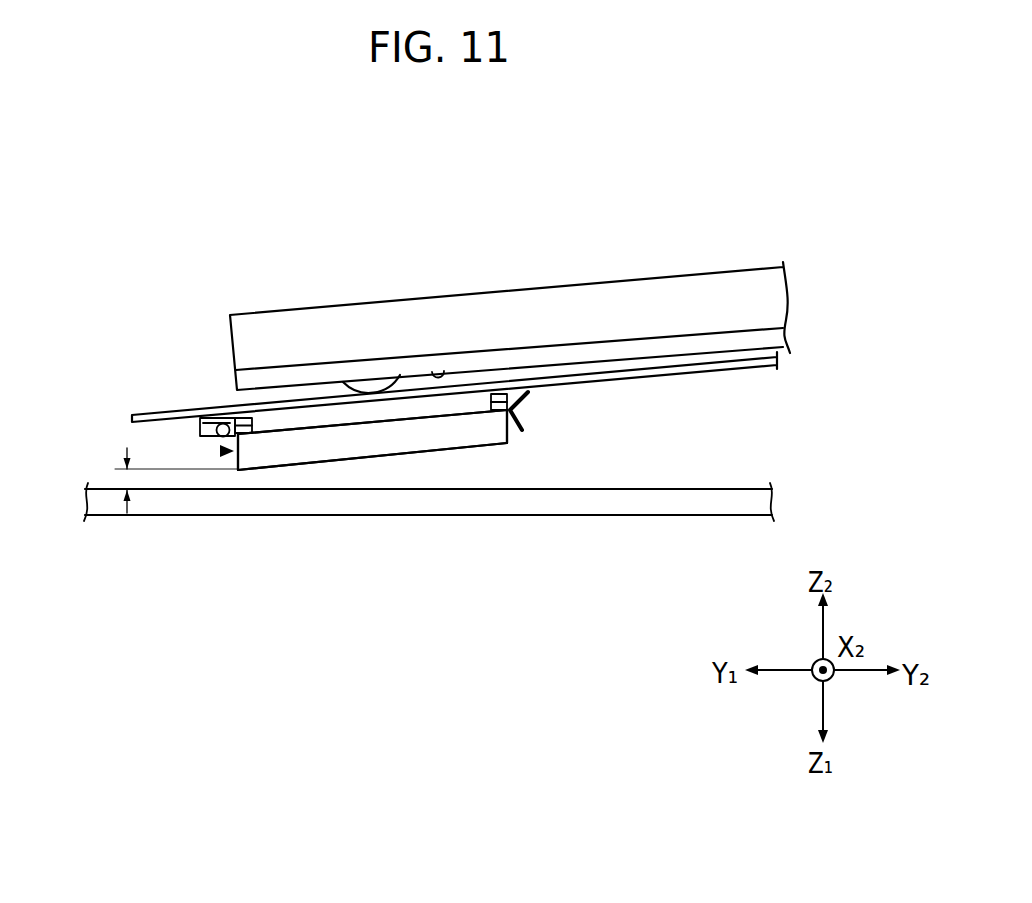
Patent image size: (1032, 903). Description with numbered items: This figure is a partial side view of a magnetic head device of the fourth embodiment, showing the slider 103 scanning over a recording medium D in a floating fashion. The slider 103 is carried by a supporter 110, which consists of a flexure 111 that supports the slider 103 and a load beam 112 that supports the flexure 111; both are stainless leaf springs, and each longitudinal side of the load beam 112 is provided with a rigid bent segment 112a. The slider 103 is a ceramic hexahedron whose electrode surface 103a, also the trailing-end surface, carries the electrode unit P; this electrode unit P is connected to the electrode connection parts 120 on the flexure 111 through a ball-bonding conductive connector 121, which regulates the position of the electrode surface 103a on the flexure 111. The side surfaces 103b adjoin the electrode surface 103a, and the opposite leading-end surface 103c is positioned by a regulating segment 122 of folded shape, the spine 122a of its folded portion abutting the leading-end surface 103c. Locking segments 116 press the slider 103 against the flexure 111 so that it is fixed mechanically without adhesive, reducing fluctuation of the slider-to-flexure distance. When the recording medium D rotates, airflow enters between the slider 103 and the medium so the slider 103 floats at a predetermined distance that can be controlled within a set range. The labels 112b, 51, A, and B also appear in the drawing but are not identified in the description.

The supporter 110 is at (723, 266).
The flexure 111 is at (732, 372).
The load beam 112 is at (773, 337).
The bent segment 112a is at (612, 303).
The protrusion of holding plate 112b is at (441, 377).
The roller 51 is at (371, 387).
The slider 103 is at (365, 455).
The electrode surface 103a is at (238, 463).
The side surface 103b is at (452, 437).
The leading-end surface 103c is at (511, 441).
The locking segment 116 is at (301, 420).
The electrode connection part 120 is at (207, 418).
The conductive connector 121 is at (229, 428).
The regulating segment 122 is at (520, 418).
The spine 122a is at (510, 410).
The direction A is at (535, 405).
The direction B is at (229, 458).
The electrode unit P is at (222, 453).
The recording medium D is at (612, 505).